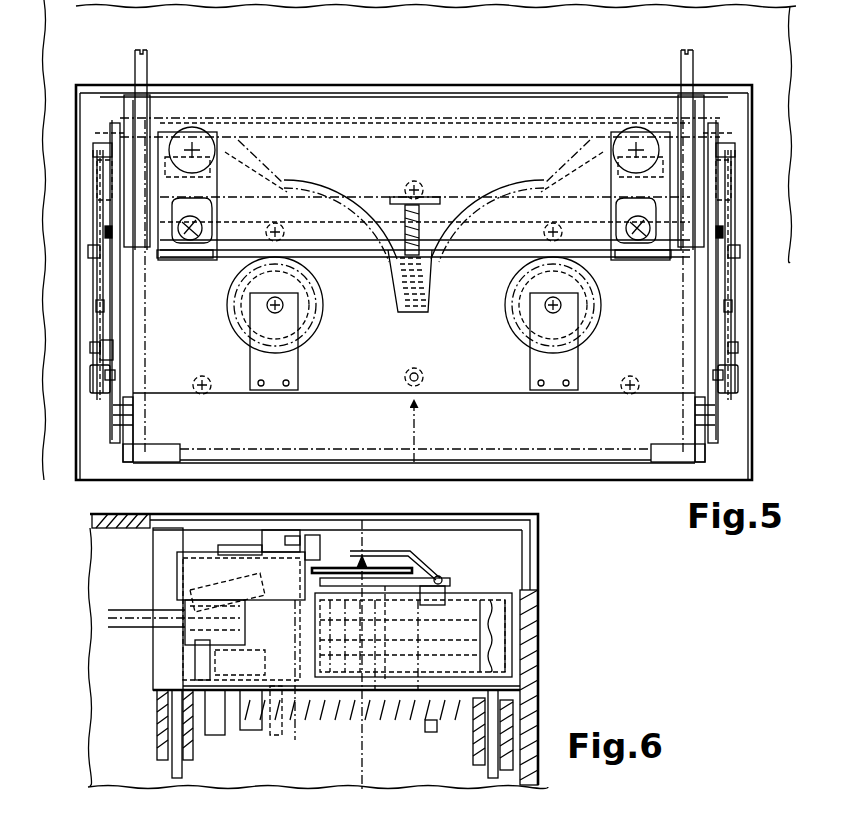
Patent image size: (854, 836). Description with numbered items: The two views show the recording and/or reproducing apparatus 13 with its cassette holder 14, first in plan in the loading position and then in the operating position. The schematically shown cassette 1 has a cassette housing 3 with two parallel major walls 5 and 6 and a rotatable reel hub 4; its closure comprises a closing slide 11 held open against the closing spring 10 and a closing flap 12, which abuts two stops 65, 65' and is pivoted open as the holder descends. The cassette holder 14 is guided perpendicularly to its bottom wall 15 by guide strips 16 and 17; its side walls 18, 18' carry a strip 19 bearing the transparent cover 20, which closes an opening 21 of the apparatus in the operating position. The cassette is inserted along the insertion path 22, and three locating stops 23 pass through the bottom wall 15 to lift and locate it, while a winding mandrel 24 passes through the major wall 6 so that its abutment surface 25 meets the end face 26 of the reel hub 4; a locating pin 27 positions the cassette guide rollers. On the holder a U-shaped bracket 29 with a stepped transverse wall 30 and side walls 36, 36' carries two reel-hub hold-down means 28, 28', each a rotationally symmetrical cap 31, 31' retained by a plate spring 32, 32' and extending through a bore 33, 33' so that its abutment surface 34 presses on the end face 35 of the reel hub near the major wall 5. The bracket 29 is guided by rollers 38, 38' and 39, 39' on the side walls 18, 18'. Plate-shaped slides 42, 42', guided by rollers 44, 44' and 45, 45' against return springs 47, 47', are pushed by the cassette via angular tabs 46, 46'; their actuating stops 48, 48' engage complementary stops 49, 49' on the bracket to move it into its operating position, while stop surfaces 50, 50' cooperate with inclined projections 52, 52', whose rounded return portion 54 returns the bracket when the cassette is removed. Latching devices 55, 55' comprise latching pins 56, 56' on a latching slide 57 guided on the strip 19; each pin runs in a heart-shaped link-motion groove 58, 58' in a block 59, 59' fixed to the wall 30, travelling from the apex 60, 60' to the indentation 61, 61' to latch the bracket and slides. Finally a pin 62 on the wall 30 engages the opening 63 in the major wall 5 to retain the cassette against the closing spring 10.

In FIG. 5, the cassette 1 is at (660, 464).
In FIG. 6, the cassette 1 is at (520, 646).
In FIG. 5, the cassette housing 3 is at (492, 450).
In FIG. 6, the cassette housing 3 is at (490, 605).
In FIG. 6, the reel hub 4 is at (410, 649).
In FIG. 6, the major wall 5 is at (480, 595).
In FIG. 6, the major wall 6 is at (512, 672).
In FIG. 5, the closing spring 10 is at (420, 270).
In FIG. 5, the closing slide 11 is at (452, 197).
In FIG. 6, the closing slide 11 is at (278, 700).
In FIG. 5, the closing flap 12 is at (310, 138).
In FIG. 6, the closing flap 12 is at (186, 581).
In FIG. 6, the recording and/or reproducing apparatus 13 is at (86, 758).
In FIG. 5, the cassette holder 14 is at (176, 462).
In FIG. 6, the cassette holder 14 is at (151, 566).
In FIG. 5, the bottom wall 15 is at (532, 458).
In FIG. 6, the bottom wall 15 is at (158, 700).
In FIG. 6, the guide strip 16 is at (172, 770).
In FIG. 6, the guide strip 17 is at (490, 776).
In FIG. 5, the side wall 18 is at (122, 146).
In FIG. 6, the side wall 18 is at (145, 609).
In FIG. 5, the side wall 18' is at (702, 145).
In FIG. 5, the strip 19 is at (294, 100).
In FIG. 6, the strip 19 is at (165, 522).
In FIG. 5, the transparent cover 20 is at (634, 476).
In FIG. 6, the transparent cover 20 is at (538, 578).
In FIG. 5, the opening 21 is at (76, 462).
In FIG. 6, the opening 21 is at (530, 546).
In FIG. 5, the insertion path 22 is at (415, 445).
In FIG. 5, the locating stop 23 is at (414, 181).
In FIG. 6, the locating stop 23 is at (242, 730).
In FIG. 6, the winding mandrel 24 is at (374, 762).
In FIG. 6, the abutment surface 25 is at (376, 682).
In FIG. 6, the end face 26 is at (418, 682).
In FIG. 6, the locating pin 27 is at (208, 735).
In FIG. 5, the reel-hub hold-down means 28 is at (296, 309).
In FIG. 6, the reel-hub hold-down means 28 is at (371, 639).
In FIG. 5, the reel-hub hold-down means 28' is at (583, 314).
In FIG. 5, the bracket 29 is at (474, 396).
In FIG. 6, the bracket 29 is at (178, 560).
In FIG. 5, the transverse wall 30 is at (318, 392).
In FIG. 6, the transverse wall 30 is at (318, 568).
In FIG. 5, the cap 31 is at (256, 305).
In FIG. 6, the cap 31 is at (385, 537).
In FIG. 5, the cap 31' is at (525, 305).
In FIG. 5, the plate spring 32 is at (252, 341).
In FIG. 6, the plate spring 32 is at (404, 584).
In FIG. 5, the plate spring 32' is at (527, 341).
In FIG. 5, the bore 33 is at (301, 305).
In FIG. 6, the bore 33 is at (428, 566).
In FIG. 5, the bore 33' is at (527, 305).
In FIG. 6, the abutment surface 34 is at (388, 556).
In FIG. 6, the end face 35 is at (405, 626).
In FIG. 5, the side wall 36 is at (78, 268).
In FIG. 6, the side wall 36 is at (184, 637).
In FIG. 5, the side wall 36' is at (748, 263).
In FIG. 5, the roller 38 is at (74, 217).
In FIG. 5, the roller 38' is at (752, 218).
In FIG. 5, the roller 39 is at (80, 382).
In FIG. 5, the roller 39' is at (751, 368).
In FIG. 5, the slide 42 is at (70, 271).
In FIG. 6, the slide 42 is at (184, 667).
In FIG. 5, the slide 42' is at (757, 271).
In FIG. 5, the roller 44 is at (68, 240).
In FIG. 5, the roller 44' is at (759, 239).
In FIG. 5, the roller 45 is at (71, 338).
In FIG. 5, the roller 45' is at (759, 339).
In FIG. 5, the angular tab 46 is at (77, 180).
In FIG. 5, the angular tab 46' is at (752, 180).
In FIG. 5, the return spring 47 is at (111, 429).
In FIG. 6, the return spring 47 is at (289, 686).
In FIG. 5, the return spring 47' is at (722, 429).
In FIG. 5, the actuating stop 48 is at (74, 152).
In FIG. 5, the actuating stop 48' is at (752, 144).
In FIG. 5, the complementary stop 49 is at (81, 130).
In FIG. 5, the complementary stop 49' is at (745, 121).
In FIG. 5, the stop surface 50 is at (74, 314).
In FIG. 5, the stop surface 50' is at (757, 315).
In FIG. 5, the projection 52 is at (80, 392).
In FIG. 5, the projection 52' is at (754, 384).
In FIG. 5, the return portion 54 is at (100, 358).
In FIG. 5, the latching device 55 is at (187, 223).
In FIG. 6, the latching device 55 is at (316, 517).
In FIG. 5, the latching device 55' is at (641, 224).
In FIG. 5, the latching pin 56 is at (212, 273).
In FIG. 6, the latching pin 56 is at (271, 520).
In FIG. 5, the latching pin 56' is at (621, 272).
In FIG. 5, the latching slide 57 is at (384, 240).
In FIG. 6, the latching slide 57 is at (307, 543).
In FIG. 5, the link-motion groove 58 is at (218, 207).
In FIG. 6, the link-motion groove 58 is at (237, 521).
In FIG. 5, the link-motion groove 58' is at (612, 207).
In FIG. 5, the block 59 is at (163, 276).
In FIG. 6, the block 59 is at (198, 518).
In FIG. 5, the block 59' is at (666, 277).
In FIG. 5, the apex 60 is at (205, 153).
In FIG. 5, the apex 60' is at (619, 153).
In FIG. 5, the indentation 61 is at (231, 229).
In FIG. 5, the indentation 61' is at (597, 228).
In FIG. 5, the pin 62 is at (420, 368).
In FIG. 6, the pin 62 is at (440, 575).
In FIG. 5, the opening 63 is at (406, 385).
In FIG. 6, the opening 63 is at (446, 590).
In FIG. 5, the stop 65 is at (137, 129).
In FIG. 6, the stop 65 is at (121, 620).
In FIG. 5, the stop 65' is at (682, 129).